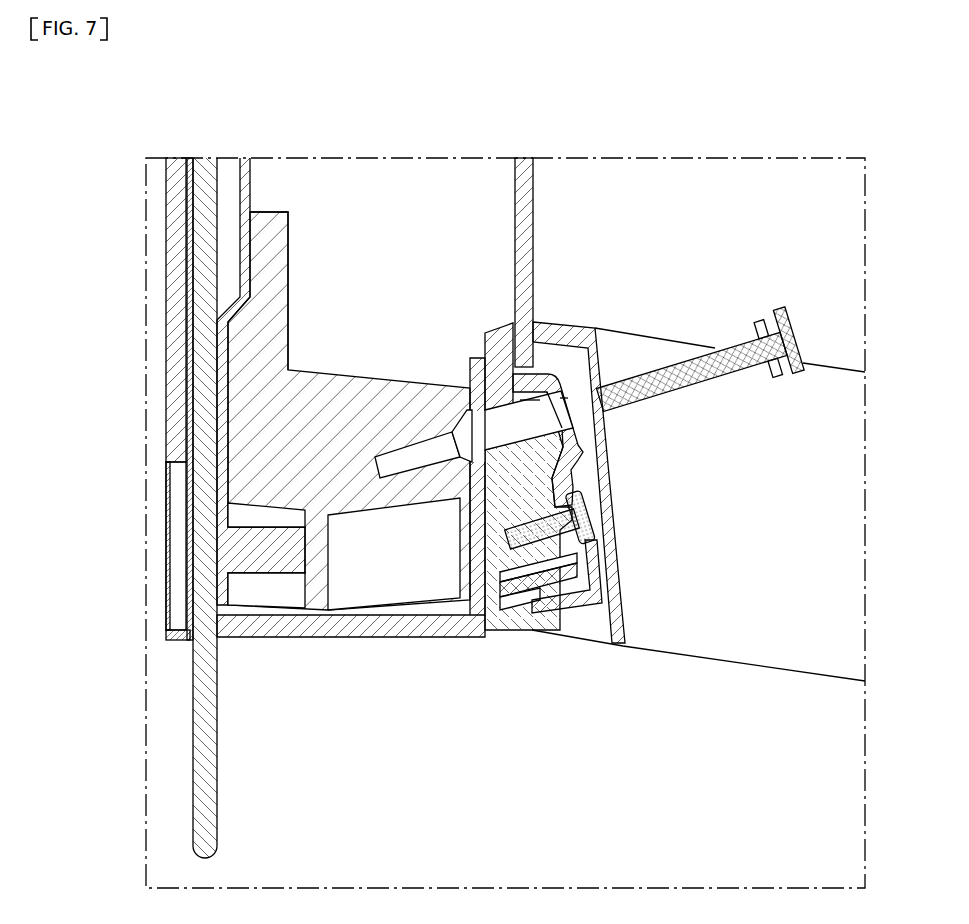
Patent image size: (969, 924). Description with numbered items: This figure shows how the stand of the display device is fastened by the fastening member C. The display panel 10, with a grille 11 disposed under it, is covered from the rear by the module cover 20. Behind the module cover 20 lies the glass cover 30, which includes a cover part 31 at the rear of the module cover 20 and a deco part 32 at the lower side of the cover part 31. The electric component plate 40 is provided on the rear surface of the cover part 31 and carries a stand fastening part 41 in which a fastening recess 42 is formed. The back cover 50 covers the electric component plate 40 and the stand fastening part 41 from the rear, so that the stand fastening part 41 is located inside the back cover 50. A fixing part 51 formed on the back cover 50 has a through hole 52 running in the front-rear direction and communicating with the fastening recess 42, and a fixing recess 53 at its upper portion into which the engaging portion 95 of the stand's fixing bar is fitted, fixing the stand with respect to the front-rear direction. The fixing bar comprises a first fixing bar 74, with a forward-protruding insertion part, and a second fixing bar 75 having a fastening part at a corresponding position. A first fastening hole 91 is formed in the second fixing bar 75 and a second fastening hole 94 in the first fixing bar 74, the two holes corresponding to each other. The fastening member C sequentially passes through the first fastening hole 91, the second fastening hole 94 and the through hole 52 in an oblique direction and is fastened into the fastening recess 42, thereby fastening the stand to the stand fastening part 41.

The display panel 10 is at (172, 273).
The grille 11 is at (166, 553).
The module cover 20 is at (180, 635).
The glass cover 30 is at (259, 508).
The cover part 31 is at (207, 748).
The deco part 32 is at (325, 709).
The electric component plate 40 is at (246, 454).
The stand fastening part 41 is at (272, 213).
The fastening recess 42 is at (421, 457).
The back cover 50 is at (542, 160).
The fixing part 51 is at (470, 580).
The through hole 52 is at (483, 438).
The fixing recess 53 is at (536, 322).
The first fixing bar 74 is at (510, 588).
The second fixing bar 75 is at (580, 458).
The first fastening hole 91 is at (558, 415).
The second fastening hole 94 is at (533, 423).
The engaging portion 95 is at (508, 333).
The fastening member c is at (742, 345).